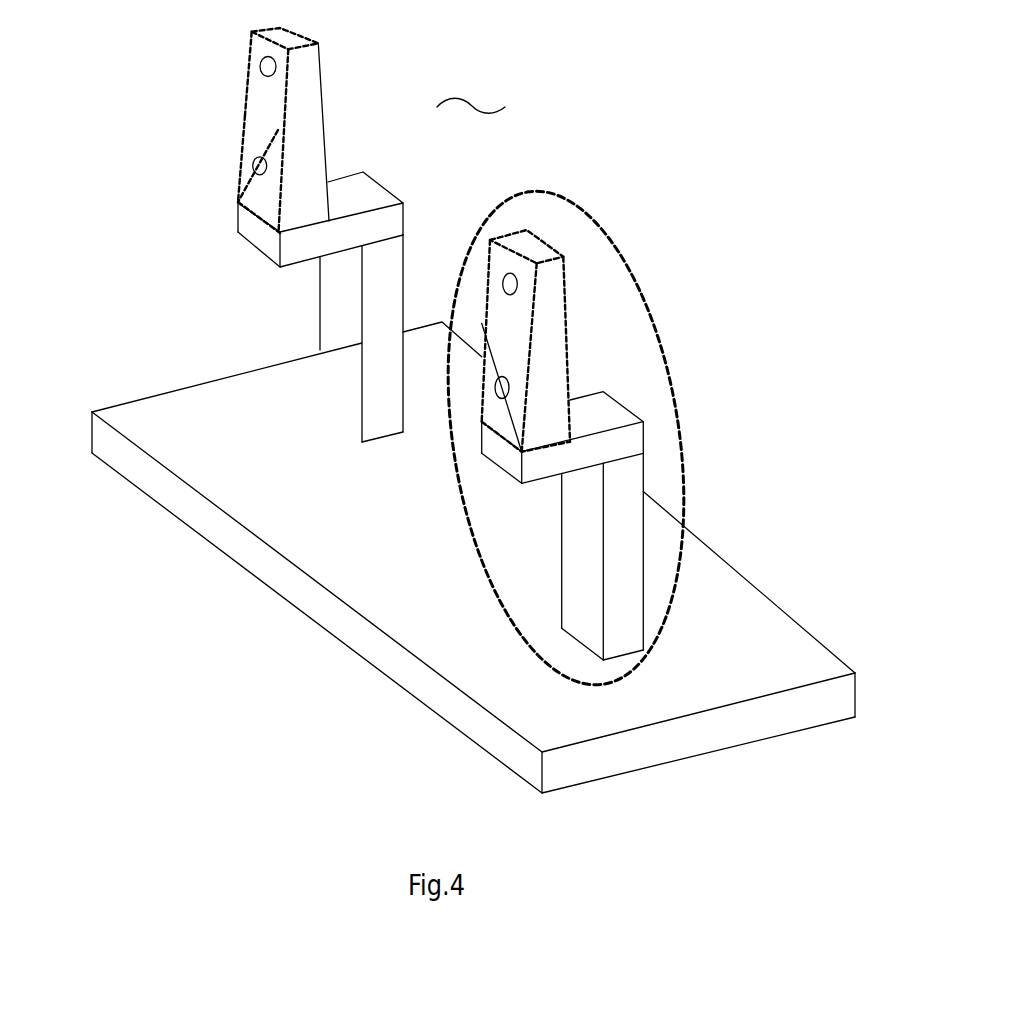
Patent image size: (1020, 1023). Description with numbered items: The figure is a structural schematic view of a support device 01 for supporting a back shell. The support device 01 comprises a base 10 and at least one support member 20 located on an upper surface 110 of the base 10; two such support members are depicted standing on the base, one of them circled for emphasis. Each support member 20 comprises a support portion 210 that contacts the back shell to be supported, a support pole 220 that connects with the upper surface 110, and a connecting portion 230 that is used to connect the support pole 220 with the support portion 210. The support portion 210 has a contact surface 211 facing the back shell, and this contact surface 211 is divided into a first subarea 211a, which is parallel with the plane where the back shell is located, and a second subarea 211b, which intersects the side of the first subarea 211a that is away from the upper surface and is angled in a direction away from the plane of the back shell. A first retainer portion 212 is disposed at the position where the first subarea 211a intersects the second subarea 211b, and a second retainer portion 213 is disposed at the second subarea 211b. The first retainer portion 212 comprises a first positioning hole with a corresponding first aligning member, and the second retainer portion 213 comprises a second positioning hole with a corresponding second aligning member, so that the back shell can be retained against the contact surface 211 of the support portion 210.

The support device 01 is at (471, 102).
The base 10 is at (473, 557).
The upper surface 110 is at (370, 649).
The support member 20 is at (597, 438).
The support portion 210 is at (583, 338).
The support pole 220 is at (660, 556).
The connecting portion 230 is at (617, 422).
The contact surface 211 is at (193, 130).
The first subarea 211a is at (253, 213).
The second subarea 211b is at (245, 111).
The first retainer portion 212 is at (258, 163).
The second retainer portion 213 is at (260, 66).